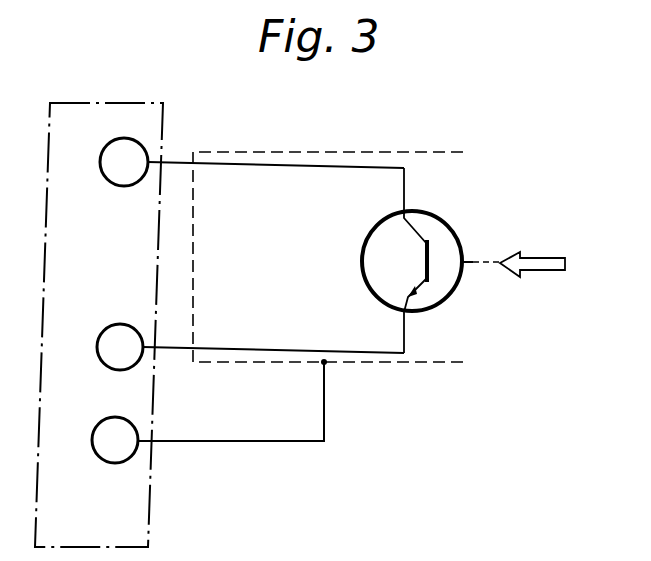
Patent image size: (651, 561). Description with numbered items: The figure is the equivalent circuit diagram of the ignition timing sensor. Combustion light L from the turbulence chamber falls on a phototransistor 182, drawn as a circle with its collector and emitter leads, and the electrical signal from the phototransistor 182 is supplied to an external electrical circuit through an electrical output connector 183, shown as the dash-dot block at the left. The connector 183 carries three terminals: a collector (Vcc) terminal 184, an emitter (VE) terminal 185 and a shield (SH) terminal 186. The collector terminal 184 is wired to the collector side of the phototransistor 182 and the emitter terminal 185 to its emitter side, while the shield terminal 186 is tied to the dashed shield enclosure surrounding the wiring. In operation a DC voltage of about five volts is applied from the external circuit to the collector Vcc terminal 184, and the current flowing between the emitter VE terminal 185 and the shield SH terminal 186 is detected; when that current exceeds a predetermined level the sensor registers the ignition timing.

The phototransistor 182 is at (441, 230).
The electrical output connector 183 is at (63, 103).
The collector (Vcc) terminal 184 is at (110, 186).
The emitter (VE) terminal 185 is at (102, 368).
The shield (SH) terminal 186 is at (112, 463).